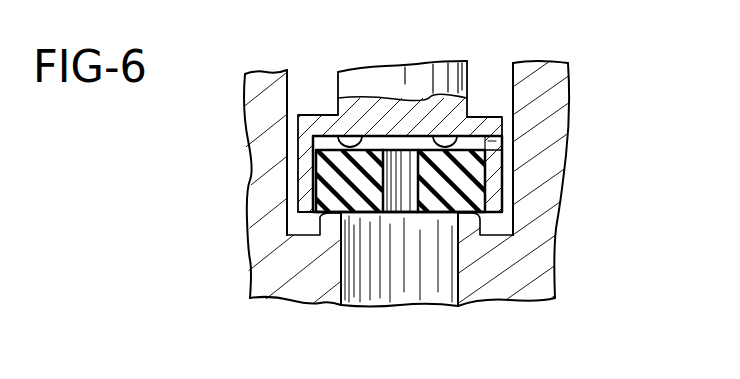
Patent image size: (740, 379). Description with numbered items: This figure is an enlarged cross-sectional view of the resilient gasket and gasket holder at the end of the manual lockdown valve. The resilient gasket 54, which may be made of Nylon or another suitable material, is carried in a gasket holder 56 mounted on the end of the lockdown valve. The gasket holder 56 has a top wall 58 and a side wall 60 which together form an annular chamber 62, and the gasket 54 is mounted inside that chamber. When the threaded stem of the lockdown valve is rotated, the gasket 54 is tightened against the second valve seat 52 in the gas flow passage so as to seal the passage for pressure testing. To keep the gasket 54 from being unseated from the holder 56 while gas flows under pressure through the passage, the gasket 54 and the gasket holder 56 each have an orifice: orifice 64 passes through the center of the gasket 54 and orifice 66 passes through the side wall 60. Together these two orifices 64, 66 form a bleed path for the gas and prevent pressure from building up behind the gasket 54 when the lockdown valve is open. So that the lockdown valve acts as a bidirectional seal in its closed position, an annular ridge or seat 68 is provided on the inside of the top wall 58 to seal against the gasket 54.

The second valve seat 52 is at (468, 218).
The resilient gasket 54 is at (518, 168).
The gasket holder 56 is at (290, 124).
The top wall 58 is at (322, 117).
The side wall 60 is at (309, 172).
The annular chamber 62 is at (413, 140).
The orifice 64 is at (500, 143).
The orifice 66 is at (406, 198).
The annular ridge or seat 68 is at (349, 141).